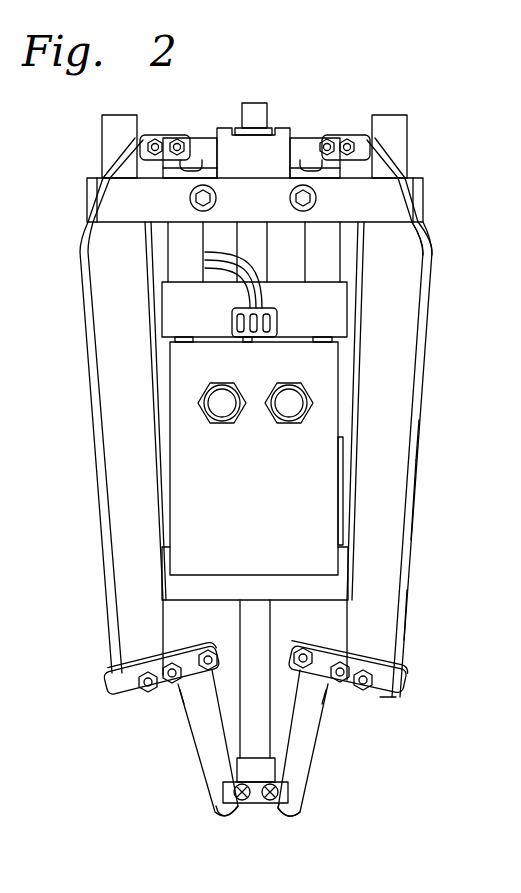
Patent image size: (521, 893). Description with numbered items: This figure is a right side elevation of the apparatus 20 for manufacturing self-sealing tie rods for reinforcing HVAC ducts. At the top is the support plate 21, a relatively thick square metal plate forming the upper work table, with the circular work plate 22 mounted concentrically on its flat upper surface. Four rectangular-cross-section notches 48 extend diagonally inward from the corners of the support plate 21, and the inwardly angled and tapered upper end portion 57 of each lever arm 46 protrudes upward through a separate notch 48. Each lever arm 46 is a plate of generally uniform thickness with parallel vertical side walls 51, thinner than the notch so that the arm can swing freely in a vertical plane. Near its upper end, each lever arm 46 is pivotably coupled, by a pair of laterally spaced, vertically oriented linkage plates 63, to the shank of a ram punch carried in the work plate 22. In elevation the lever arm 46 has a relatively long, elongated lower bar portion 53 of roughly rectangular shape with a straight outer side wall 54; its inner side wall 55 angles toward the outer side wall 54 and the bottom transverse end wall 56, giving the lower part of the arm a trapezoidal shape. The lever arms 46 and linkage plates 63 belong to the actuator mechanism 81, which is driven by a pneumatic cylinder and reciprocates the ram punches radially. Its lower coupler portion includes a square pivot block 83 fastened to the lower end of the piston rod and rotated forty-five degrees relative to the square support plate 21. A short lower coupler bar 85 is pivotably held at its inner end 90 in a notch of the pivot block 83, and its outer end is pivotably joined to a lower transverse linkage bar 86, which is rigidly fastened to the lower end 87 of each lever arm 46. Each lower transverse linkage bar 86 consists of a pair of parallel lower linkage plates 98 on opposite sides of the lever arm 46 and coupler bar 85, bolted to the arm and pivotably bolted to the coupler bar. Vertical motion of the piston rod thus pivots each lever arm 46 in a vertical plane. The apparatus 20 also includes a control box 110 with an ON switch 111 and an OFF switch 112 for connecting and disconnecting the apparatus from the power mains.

The apparatus 20 is at (356, 104).
The support plate 21 is at (142, 208).
The work plate 22 is at (203, 140).
The linkage plates 63 is at (335, 135).
The notches 48 is at (418, 163).
The attachment post A is at (254, 103).
The upper end portion 57 is at (400, 272).
The lever arms 46 is at (84, 354).
The side walls 51 is at (416, 478).
The lower bar portion 53 is at (400, 430).
The outer side wall 54 is at (403, 612).
The inner side wall 55 is at (360, 641).
The control box 110 is at (185, 512).
The ON switch 111 is at (207, 388).
The OFF switch 112 is at (275, 388).
The lower end 87 is at (130, 694).
The lower linkage plates 98 is at (120, 697).
The lower transverse linkage bar 86 is at (146, 706).
The bottom transverse end wall 56 is at (383, 698).
The lower coupler bar 85 is at (205, 800).
The inner end 90 is at (225, 815).
The actuator mechanism 81 is at (74, 767).
The pivot block 83 is at (263, 805).